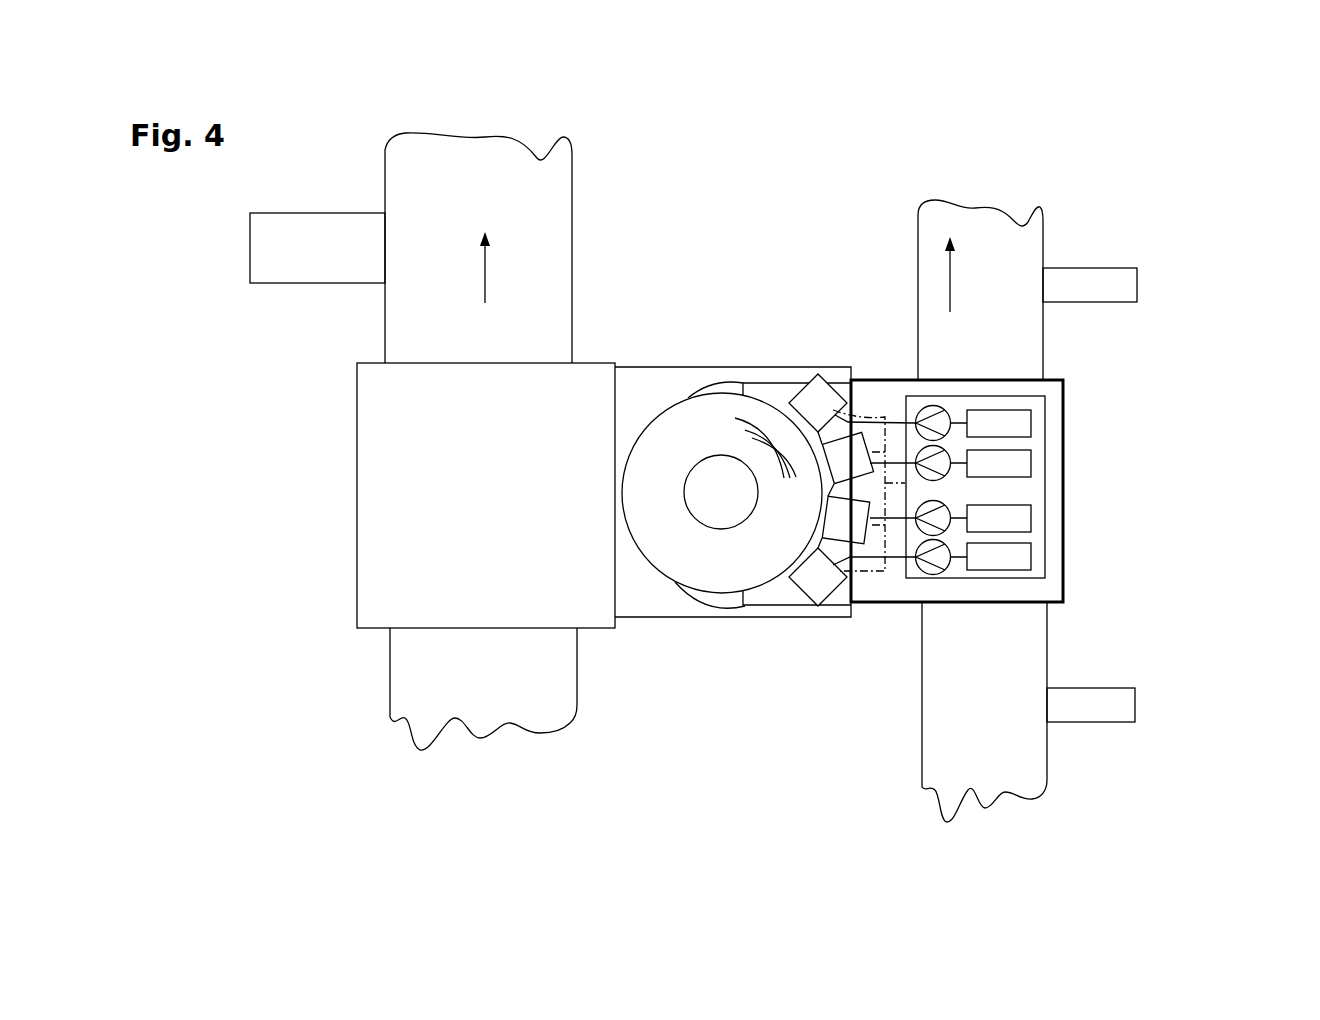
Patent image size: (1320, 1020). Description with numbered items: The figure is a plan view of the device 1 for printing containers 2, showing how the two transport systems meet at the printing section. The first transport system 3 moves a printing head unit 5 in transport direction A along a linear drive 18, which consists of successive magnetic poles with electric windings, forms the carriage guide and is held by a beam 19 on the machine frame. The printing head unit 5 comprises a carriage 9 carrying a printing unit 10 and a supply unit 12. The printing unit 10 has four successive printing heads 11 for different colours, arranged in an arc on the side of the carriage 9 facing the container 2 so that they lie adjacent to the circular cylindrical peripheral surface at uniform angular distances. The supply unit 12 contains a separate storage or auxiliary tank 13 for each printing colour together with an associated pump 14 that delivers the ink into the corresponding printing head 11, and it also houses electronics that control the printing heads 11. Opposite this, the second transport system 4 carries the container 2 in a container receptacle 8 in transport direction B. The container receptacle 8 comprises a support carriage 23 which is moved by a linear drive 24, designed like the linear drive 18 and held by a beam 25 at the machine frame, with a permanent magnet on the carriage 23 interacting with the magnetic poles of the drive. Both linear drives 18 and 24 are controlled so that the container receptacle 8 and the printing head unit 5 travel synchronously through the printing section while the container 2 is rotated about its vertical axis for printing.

The device 1 is at (915, 134).
The container 2 is at (695, 413).
The first transport system 3 is at (1050, 193).
The second transport system 4 is at (290, 656).
The printing head unit 5 is at (1102, 447).
The container receptacle 8 is at (651, 667).
The carriage 9 is at (1062, 557).
The printing unit 10 is at (853, 345).
The printing head 11 is at (803, 400).
The supply unit 12 is at (1050, 435).
The storage or auxiliary tank 13 is at (1013, 460).
The pump 14 is at (942, 560).
The linear drive 18 is at (1015, 632).
The beam 19 is at (1097, 270).
The support carriage 23 is at (402, 480).
The linear drive 24 is at (543, 240).
The beam 25 is at (313, 267).